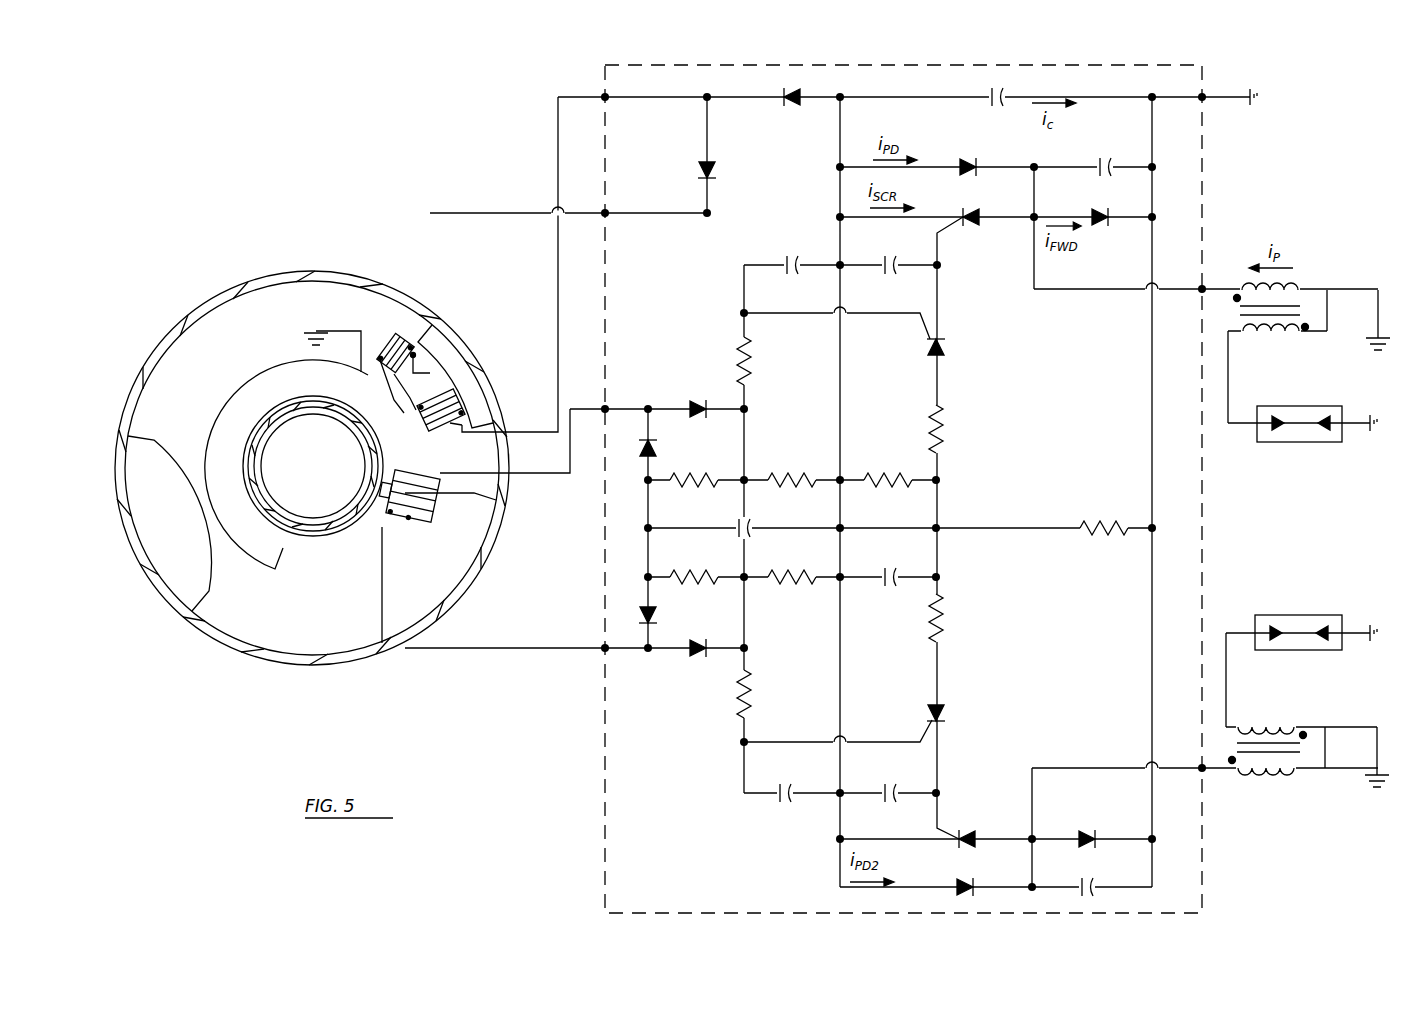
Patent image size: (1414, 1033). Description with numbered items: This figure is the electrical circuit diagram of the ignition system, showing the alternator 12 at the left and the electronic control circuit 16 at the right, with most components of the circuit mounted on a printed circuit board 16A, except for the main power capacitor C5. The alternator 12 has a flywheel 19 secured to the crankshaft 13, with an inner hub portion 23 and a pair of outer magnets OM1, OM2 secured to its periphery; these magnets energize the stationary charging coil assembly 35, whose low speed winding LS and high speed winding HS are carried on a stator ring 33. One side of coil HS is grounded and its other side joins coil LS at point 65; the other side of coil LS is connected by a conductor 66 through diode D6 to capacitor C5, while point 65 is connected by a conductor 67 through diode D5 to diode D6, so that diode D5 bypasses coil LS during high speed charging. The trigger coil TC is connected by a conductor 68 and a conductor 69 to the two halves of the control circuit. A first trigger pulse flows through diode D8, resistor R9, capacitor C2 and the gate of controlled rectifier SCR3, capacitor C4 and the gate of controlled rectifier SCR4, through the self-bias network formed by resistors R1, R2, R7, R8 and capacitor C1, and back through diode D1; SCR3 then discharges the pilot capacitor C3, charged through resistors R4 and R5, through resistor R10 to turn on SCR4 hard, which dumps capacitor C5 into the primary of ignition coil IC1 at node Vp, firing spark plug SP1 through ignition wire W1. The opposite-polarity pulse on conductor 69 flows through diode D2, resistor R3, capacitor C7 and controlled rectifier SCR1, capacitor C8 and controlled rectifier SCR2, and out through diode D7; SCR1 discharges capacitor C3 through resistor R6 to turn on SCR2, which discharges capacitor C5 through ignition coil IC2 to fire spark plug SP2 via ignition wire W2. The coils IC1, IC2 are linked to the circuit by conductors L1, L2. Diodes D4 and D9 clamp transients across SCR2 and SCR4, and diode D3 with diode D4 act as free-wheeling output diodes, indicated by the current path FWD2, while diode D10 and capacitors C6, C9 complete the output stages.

The alternator 12 is at (297, 672).
The crankshaft 13 is at (328, 477).
The electronic control circuit 16 is at (1080, 387).
The printed circuit board 16A is at (1203, 186).
The flywheel 19 is at (338, 666).
The inner hub portion 23 is at (330, 538).
The stator ring 33 is at (265, 375).
The charging coil assembly 35 is at (352, 330).
The point 65 is at (397, 393).
The conductor 66 is at (552, 152).
The conductor 67 is at (520, 213).
The conductor 68 is at (547, 476).
The conductor 69 is at (530, 646).
The high speed winding HS is at (402, 333).
The low speed winding LS is at (468, 396).
The trigger coil TC is at (428, 518).
The outer magnet OM1 is at (455, 355).
The outer magnet OM2 is at (172, 587).
The ignition coil IC1 is at (1270, 342).
The ignition coil IC2 is at (1258, 722).
The spark plug SP1 is at (1306, 414).
The spark plug SP2 is at (1298, 628).
The ignition wire W1 is at (1243, 428).
The ignition wire W2 is at (1244, 631).
The electrical conductor L1 is at (1096, 289).
The electrical conductor L2 is at (1098, 745).
The primary voltage node Vp is at (1218, 277).
The freewheeling diode current path FWD2 is at (1045, 832).
The diode D1 is at (634, 613).
The diode D2 is at (699, 640).
The free-wheeling output diode D3 is at (1090, 830).
The diode D4 is at (965, 878).
The diode D5 is at (723, 172).
The diode D6 is at (792, 89).
The diode D7 is at (634, 446).
The diode D8 is at (699, 400).
The protection diode D9 is at (965, 158).
The diode D10 is at (1102, 208).
The resistor R1 is at (694, 568).
The resistor R2 is at (792, 568).
The resistor R3 is at (761, 694).
The resistor R4 is at (1104, 519).
The resistor R5 is at (888, 471).
The resistor R6 is at (952, 618).
The resistor R7 is at (694, 471).
The resistor R8 is at (792, 471).
The resistor R9 is at (761, 361).
The resistor R10 is at (956, 429).
The capacitor C1 is at (746, 520).
The capacitor C2 is at (788, 257).
The capacitor C3 is at (890, 569).
The capacitor C4 is at (888, 257).
The capacitor C5 is at (996, 88).
The capacitor C6 is at (1087, 879).
The capacitor C7 is at (785, 785).
The capacitor C8 is at (890, 785).
The capacitor C9 is at (1105, 159).
The controlled rectifier SCR1 is at (963, 712).
The controlled rectifier SCR2 is at (975, 830).
The controlled rectifier SCR3 is at (963, 346).
The controlled rectifier SCR4 is at (974, 208).